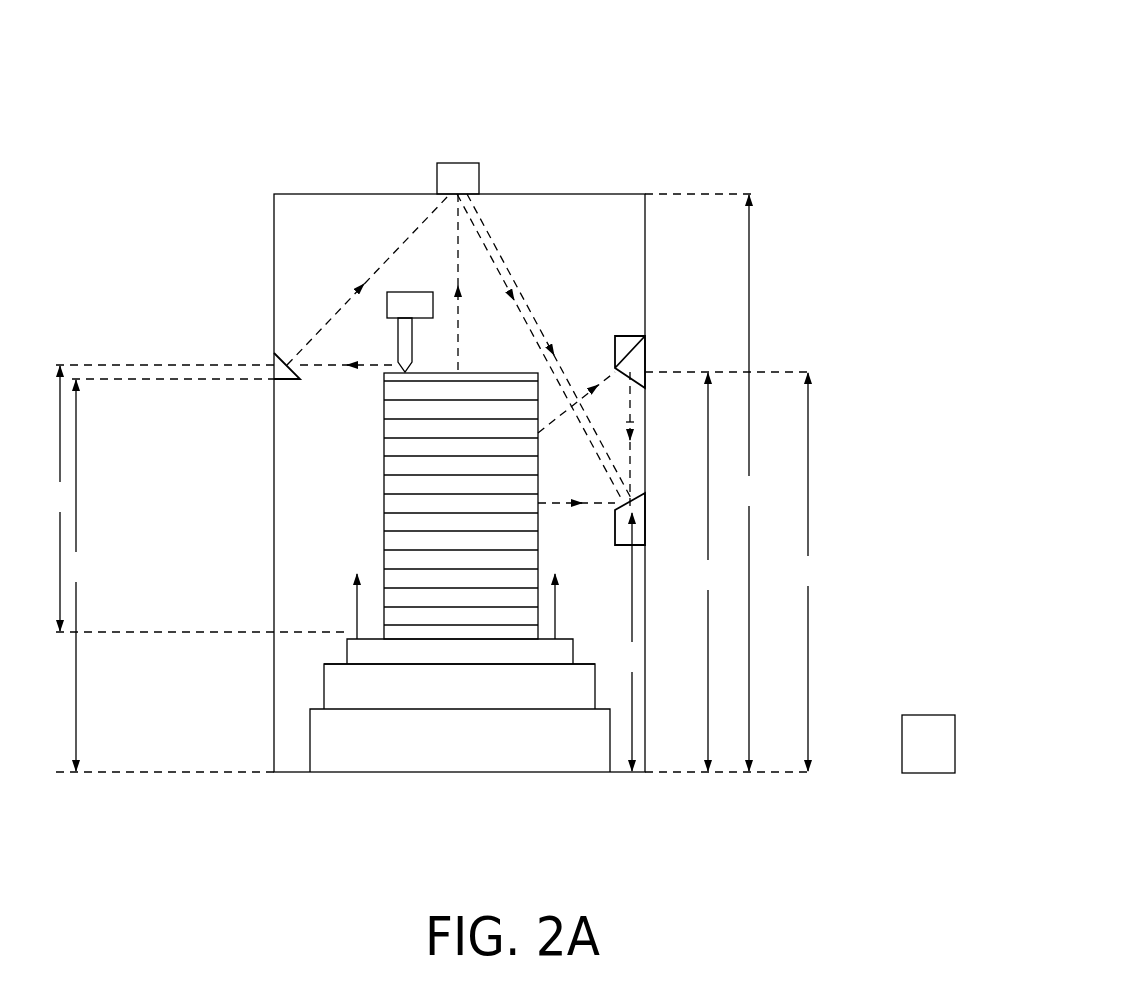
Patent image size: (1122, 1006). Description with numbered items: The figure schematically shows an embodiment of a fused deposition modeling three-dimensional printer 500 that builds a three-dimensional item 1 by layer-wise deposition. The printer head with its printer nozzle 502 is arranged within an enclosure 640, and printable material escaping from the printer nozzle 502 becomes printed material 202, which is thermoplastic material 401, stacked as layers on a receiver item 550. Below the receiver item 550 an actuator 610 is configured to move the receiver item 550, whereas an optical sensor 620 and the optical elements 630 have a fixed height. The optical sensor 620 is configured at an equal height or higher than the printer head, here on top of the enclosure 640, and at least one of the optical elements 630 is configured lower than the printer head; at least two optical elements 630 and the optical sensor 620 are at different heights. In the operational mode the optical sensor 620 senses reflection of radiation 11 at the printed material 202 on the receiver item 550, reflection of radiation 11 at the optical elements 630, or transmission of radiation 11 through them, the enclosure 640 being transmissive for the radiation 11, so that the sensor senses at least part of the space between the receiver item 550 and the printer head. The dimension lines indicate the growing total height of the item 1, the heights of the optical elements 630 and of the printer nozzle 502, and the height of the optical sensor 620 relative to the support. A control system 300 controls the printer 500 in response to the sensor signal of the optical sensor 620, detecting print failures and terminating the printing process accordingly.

The fused deposition modeling 3D printer 500 is at (752, 78).
The enclosure 640 is at (250, 170).
The optical sensor 620 is at (478, 150).
The optical elements 630 is at (273, 352).
The printer nozzle 502 is at (390, 338).
The radiation 11 is at (455, 280).
The 3D item 1 is at (634, 422).
The 3D printed material 202 is at (416, 506).
The thermoplastic material 401 is at (408, 485).
The receiver item 550 is at (322, 653).
The actuator 610 is at (297, 690).
The control system 300 is at (922, 685).